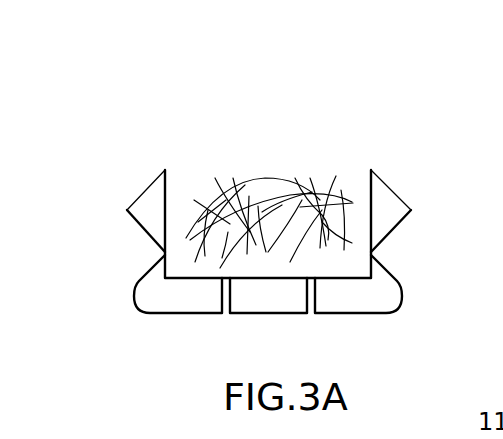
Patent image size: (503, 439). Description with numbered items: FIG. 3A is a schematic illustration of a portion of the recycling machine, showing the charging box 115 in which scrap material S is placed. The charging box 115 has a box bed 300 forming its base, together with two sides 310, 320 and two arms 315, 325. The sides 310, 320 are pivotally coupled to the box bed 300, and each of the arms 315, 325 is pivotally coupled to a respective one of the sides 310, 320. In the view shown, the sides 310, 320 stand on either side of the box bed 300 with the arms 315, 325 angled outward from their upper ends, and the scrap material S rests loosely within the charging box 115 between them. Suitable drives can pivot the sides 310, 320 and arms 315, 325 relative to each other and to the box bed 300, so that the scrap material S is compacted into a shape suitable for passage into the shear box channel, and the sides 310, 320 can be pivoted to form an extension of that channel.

The charging box 115 is at (345, 111).
The scrap material S is at (247, 167).
The box bed 300 is at (267, 298).
The side 310 is at (388, 298).
The arm 315 is at (392, 212).
The side 320 is at (147, 292).
The arm 325 is at (143, 208).